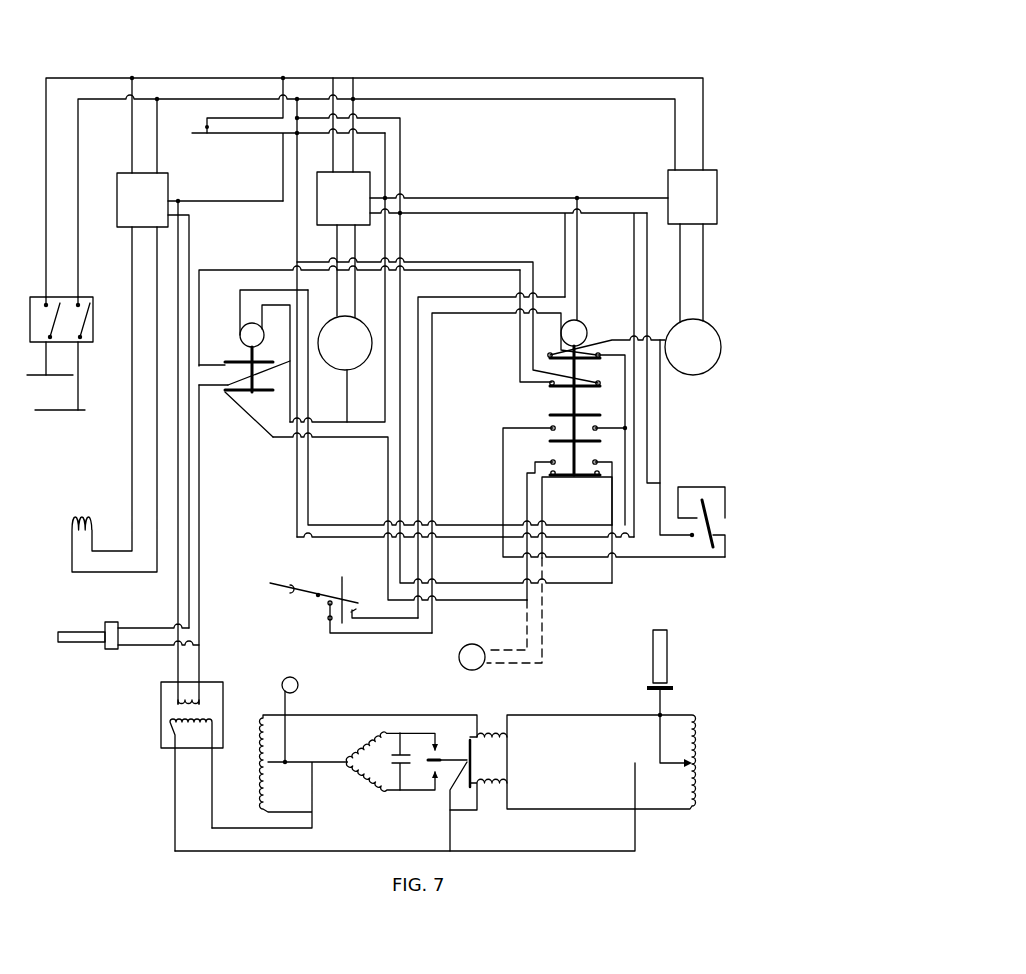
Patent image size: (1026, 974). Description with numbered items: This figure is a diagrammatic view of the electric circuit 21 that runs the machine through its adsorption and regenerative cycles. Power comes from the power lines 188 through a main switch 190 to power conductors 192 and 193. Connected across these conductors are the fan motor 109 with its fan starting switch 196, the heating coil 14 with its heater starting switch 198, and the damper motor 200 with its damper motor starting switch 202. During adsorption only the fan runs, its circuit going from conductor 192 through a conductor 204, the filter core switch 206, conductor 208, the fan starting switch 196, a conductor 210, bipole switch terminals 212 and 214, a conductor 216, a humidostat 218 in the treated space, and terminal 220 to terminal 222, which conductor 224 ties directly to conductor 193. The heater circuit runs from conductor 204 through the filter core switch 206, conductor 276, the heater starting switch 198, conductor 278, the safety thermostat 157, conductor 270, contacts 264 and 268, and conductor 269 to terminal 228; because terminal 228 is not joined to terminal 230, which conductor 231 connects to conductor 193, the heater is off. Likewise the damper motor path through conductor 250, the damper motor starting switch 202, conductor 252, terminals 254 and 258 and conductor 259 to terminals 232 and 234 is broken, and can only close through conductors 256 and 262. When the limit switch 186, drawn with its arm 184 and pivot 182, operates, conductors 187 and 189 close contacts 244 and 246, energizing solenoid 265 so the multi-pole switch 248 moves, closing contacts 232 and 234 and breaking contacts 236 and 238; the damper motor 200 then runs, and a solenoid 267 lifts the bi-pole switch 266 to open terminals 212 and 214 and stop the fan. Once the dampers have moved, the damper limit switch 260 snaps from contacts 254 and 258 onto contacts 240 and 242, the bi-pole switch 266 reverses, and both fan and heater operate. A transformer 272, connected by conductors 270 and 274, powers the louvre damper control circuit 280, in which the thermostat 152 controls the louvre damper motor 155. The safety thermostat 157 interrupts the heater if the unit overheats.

The electric circuit 21 is at (524, 72).
The power conductor 192 is at (80, 76).
The power conductor 193 is at (102, 101).
The conductor 204 is at (240, 119).
The filter core switch 206 is at (211, 129).
The conductor 208 is at (313, 134).
The heater starting switch 198 is at (142, 200).
The fan starting switch 196 is at (343, 152).
The conductor 250 is at (484, 196).
The damper motor starting switch 202 is at (692, 197).
The conductor 276 is at (242, 203).
The conductor 278 is at (191, 250).
The conductor 269 is at (258, 269).
The main switch 190 is at (84, 305).
The solenoid 267 is at (241, 328).
The contact 268 is at (236, 361).
The contact 264 is at (277, 354).
The bipole switch terminal 212 is at (260, 402).
The bipole switch terminal 214 is at (236, 392).
The bi-pole switch 266 is at (251, 470).
The fan motor 109 is at (345, 323).
The conductor 210 is at (386, 403).
The conductor 231 is at (475, 260).
The conductor 187 is at (433, 297).
The conductor 189 is at (447, 311).
The contact 232 is at (548, 353).
The contact 234 is at (601, 352).
The solenoid 265 is at (578, 321).
The terminal 230 is at (463, 321).
The terminal 228 is at (548, 385).
The contact 236 is at (550, 431).
The contact 238 is at (598, 429).
The multi-pole switch 248 is at (568, 395).
The terminal 220 is at (551, 461).
The terminal 222 is at (602, 464).
The conductor 224 is at (612, 499).
The conductor 256 is at (465, 522).
The conductor 262 is at (465, 538).
The conductor 252 is at (645, 270).
The damper motor 200 is at (693, 299).
The conductor 259 is at (662, 410).
The damper limit switch 260 is at (722, 463).
The terminal 254 is at (701, 502).
The contact 240 is at (713, 520).
The contact 242 is at (718, 545).
The terminal 258 is at (692, 537).
The conductor 216 is at (388, 488).
The power lines 188 is at (33, 382).
The heating coil 14 is at (81, 511).
The conductor 274 is at (176, 598).
The limit switch arm 184 is at (289, 588).
The limit switch 186 is at (316, 585).
The limit switch pivot 182 is at (308, 598).
The contact 246 is at (360, 611).
The contact 244 is at (328, 608).
The safety thermostat 157 is at (83, 643).
The conductor 270 is at (200, 660).
The transformer 272 is at (165, 736).
The louvre damper motor 155 is at (299, 681).
The humidostat 218 is at (469, 652).
The thermostat 152 is at (669, 653).
The louvre damper control circuit 280 is at (532, 851).